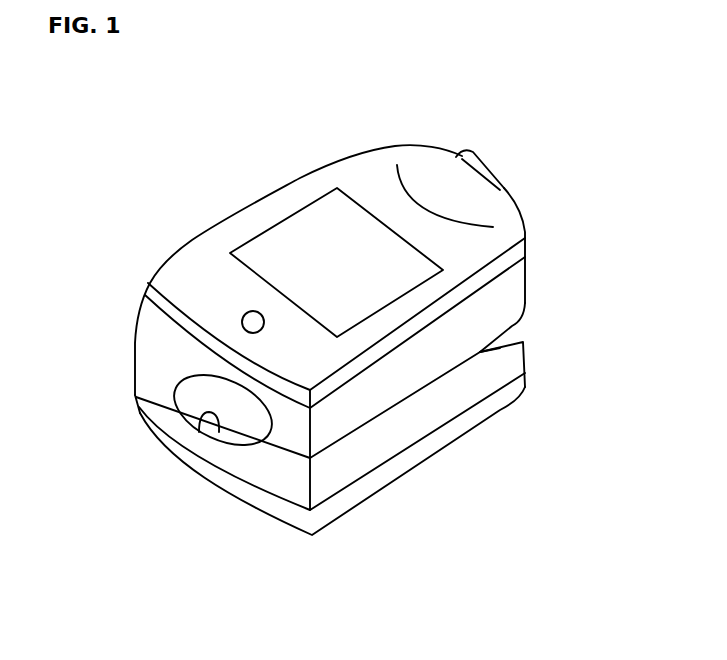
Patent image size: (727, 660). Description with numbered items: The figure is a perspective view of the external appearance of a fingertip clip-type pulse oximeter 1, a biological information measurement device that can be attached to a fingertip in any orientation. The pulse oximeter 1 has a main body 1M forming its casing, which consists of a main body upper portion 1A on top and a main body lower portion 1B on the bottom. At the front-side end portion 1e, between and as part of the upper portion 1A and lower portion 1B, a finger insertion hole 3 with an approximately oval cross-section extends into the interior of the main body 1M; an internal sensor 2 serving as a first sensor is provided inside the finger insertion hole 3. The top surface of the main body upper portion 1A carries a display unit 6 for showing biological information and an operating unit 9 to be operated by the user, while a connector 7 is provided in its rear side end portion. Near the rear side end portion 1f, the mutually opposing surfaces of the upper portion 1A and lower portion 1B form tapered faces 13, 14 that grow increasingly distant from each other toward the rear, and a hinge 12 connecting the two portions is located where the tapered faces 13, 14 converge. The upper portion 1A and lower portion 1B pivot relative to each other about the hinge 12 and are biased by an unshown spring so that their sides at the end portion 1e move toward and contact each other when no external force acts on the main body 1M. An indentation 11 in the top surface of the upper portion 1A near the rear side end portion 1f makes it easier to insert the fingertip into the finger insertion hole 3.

The pulse oximeter 1 is at (190, 160).
The main body upper portion 1A is at (365, 177).
The main body lower portion 1B is at (411, 432).
The main body 1M is at (298, 178).
The end portion 1e is at (258, 467).
The rear side end portion 1f is at (526, 273).
The internal sensor 2 is at (223, 387).
The finger insertion hole 3 is at (200, 412).
The display unit 6 is at (243, 243).
The connector 7 is at (487, 163).
The operating unit 9 is at (243, 315).
The indentation 11 is at (463, 198).
The hinge 12 is at (470, 362).
The tapered face 13 is at (523, 308).
The tapered face 14 is at (523, 330).